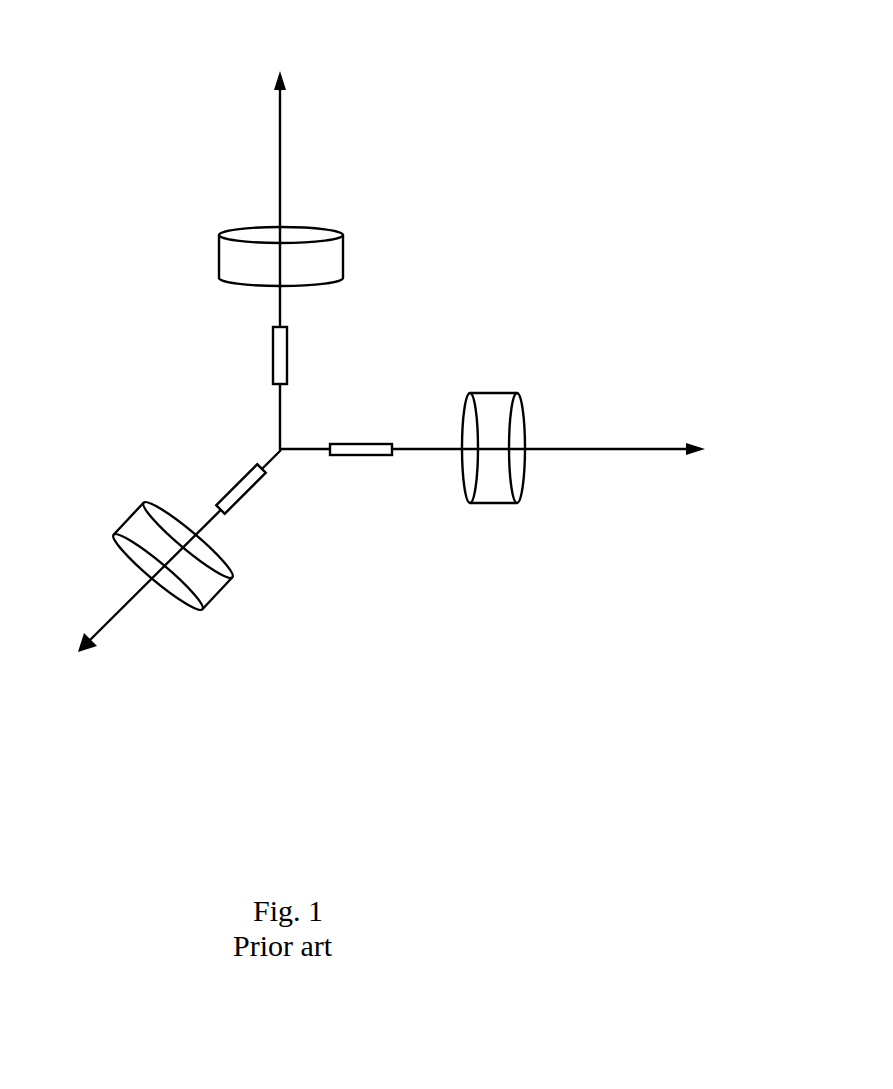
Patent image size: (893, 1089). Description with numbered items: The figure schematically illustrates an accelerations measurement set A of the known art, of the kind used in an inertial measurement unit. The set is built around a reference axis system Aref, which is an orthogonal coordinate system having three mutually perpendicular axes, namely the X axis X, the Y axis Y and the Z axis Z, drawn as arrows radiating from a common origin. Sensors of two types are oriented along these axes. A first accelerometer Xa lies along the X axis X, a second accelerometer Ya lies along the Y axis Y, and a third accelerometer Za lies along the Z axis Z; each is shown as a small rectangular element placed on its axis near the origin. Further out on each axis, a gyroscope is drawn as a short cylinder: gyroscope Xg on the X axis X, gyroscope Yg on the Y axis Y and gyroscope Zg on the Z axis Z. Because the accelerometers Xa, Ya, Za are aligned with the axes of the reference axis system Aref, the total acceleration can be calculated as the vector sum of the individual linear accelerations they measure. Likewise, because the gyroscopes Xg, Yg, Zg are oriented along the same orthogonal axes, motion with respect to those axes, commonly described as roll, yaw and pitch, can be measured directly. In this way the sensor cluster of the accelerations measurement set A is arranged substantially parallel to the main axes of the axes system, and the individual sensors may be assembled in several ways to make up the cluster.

The X axis X is at (159, 574).
The Y axis Y is at (517, 451).
The Z axis Z is at (275, 229).
The gyroscope Xg is at (122, 513).
The gyroscope Yg is at (500, 383).
The gyroscope Zg is at (208, 244).
The accelerometer Xa is at (232, 473).
The accelerometer Ya is at (369, 442).
The accelerometer Za is at (268, 350).
The reference axis system Aref is at (302, 477).
The accelerations measurement set A is at (503, 706).